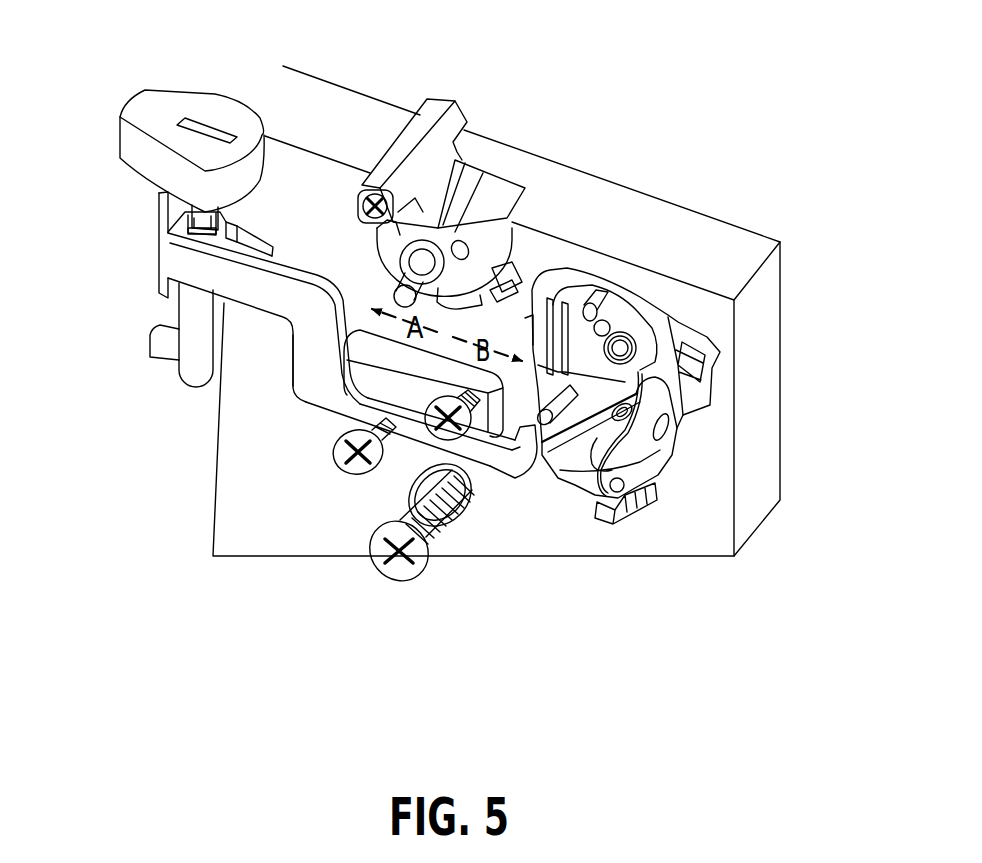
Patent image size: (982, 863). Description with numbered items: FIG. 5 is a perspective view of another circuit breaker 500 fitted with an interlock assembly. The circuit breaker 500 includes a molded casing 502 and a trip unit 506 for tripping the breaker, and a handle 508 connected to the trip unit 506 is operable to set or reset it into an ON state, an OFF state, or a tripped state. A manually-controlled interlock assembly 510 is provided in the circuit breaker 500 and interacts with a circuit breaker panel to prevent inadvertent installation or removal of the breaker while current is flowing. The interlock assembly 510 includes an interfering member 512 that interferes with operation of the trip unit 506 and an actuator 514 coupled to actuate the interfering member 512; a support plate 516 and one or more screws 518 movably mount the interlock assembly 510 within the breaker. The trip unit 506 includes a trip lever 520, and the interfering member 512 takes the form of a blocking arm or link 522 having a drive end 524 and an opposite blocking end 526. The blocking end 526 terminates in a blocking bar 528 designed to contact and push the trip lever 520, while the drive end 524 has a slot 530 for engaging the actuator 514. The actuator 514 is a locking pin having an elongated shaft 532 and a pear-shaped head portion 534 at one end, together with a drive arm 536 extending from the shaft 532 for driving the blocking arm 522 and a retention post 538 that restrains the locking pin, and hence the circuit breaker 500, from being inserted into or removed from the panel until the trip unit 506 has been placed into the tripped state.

The circuit breaker 500 is at (736, 130).
The molded casing 502 is at (530, 150).
The trip unit 506 is at (634, 281).
The handle 508 is at (433, 108).
The interlock assembly 510 is at (301, 194).
The interfering member 512 is at (307, 357).
The actuator 514 is at (296, 332).
The support plate 516 is at (405, 450).
The screws 518 is at (333, 450).
The trip lever 520 is at (650, 480).
The blocking arm 522 is at (253, 335).
The drive end 524 is at (187, 262).
The blocking end 526 is at (483, 453).
The blocking bar 528 is at (528, 453).
The slot 530 is at (231, 215).
The elongated shaft 532 is at (183, 310).
The head portion 534 is at (130, 141).
The drive arm 536 is at (207, 213).
The retention post 538 is at (168, 349).